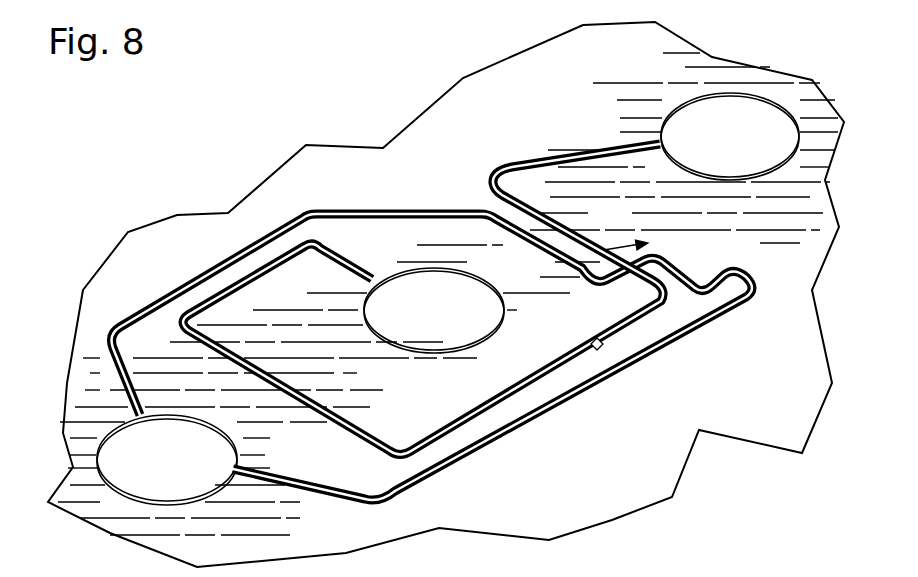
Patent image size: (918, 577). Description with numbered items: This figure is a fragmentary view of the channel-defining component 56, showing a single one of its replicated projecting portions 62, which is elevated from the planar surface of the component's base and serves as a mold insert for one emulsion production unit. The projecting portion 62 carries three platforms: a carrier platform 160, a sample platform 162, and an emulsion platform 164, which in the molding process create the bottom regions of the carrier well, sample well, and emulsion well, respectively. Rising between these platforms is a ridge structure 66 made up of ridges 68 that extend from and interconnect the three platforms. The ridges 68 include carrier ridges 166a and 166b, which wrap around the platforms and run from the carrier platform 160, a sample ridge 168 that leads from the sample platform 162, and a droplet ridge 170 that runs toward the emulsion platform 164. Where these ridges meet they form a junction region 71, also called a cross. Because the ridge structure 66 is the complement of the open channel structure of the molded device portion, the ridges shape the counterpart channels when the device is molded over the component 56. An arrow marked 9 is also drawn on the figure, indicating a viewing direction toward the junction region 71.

The channel-defining component 56 is at (262, 178).
The projecting portion 62 is at (348, 182).
The ridge structure 66 is at (437, 332).
The ridges 68 is at (423, 299).
The junction region 71 is at (660, 262).
The section view indicator 9 is at (634, 243).
The carrier platform 160 is at (190, 472).
The sample platform 162 is at (457, 316).
The emulsion platform 164 is at (756, 141).
The carrier ridge 166a is at (503, 238).
The carrier ridge 166b is at (679, 320).
The sample ridge 168 is at (594, 339).
The droplet ridge 170 is at (590, 275).